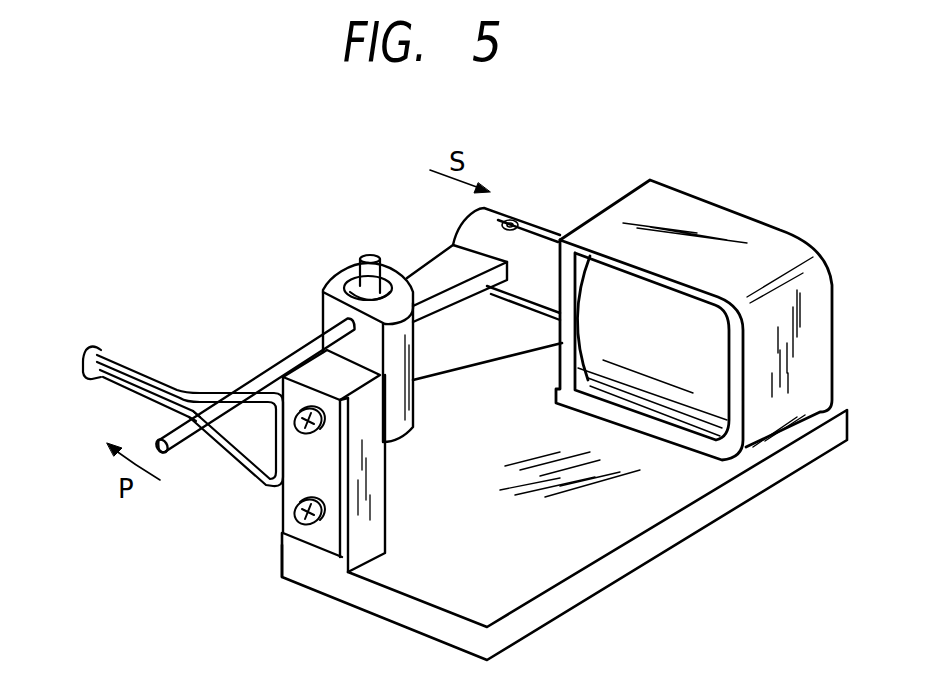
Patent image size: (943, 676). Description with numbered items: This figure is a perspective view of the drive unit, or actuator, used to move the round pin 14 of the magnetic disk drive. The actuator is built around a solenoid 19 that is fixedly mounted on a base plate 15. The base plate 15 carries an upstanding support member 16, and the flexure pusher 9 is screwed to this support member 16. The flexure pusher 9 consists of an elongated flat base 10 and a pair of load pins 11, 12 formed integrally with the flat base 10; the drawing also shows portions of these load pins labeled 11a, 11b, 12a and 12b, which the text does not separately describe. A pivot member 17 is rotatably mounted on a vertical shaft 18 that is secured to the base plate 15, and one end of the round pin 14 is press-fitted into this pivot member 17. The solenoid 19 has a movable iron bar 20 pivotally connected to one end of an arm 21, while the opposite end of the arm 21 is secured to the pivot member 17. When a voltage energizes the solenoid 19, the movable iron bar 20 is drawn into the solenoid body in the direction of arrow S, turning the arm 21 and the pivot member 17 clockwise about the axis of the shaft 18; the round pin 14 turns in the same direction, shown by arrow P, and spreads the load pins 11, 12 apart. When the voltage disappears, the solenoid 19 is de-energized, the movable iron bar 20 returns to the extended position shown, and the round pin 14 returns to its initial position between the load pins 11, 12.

The flexure pusher 9 is at (300, 552).
The flat base 10 is at (335, 467).
The load pin 11 is at (263, 412).
The spring wire horizontal portion 11a is at (212, 395).
The spring wire arm 11b is at (115, 367).
The load pin 12 is at (258, 483).
The spring wire inclined portion 12a is at (213, 457).
The spring wire arm 12b is at (107, 382).
The round pin 14 is at (288, 358).
The base plate 15 is at (620, 530).
The support member 16 is at (368, 547).
The pivot member 17 is at (333, 283).
The vertical shaft 18 is at (368, 253).
The solenoid 19 is at (703, 207).
The movable iron bar 20 is at (533, 230).
The arm 21 is at (433, 267).